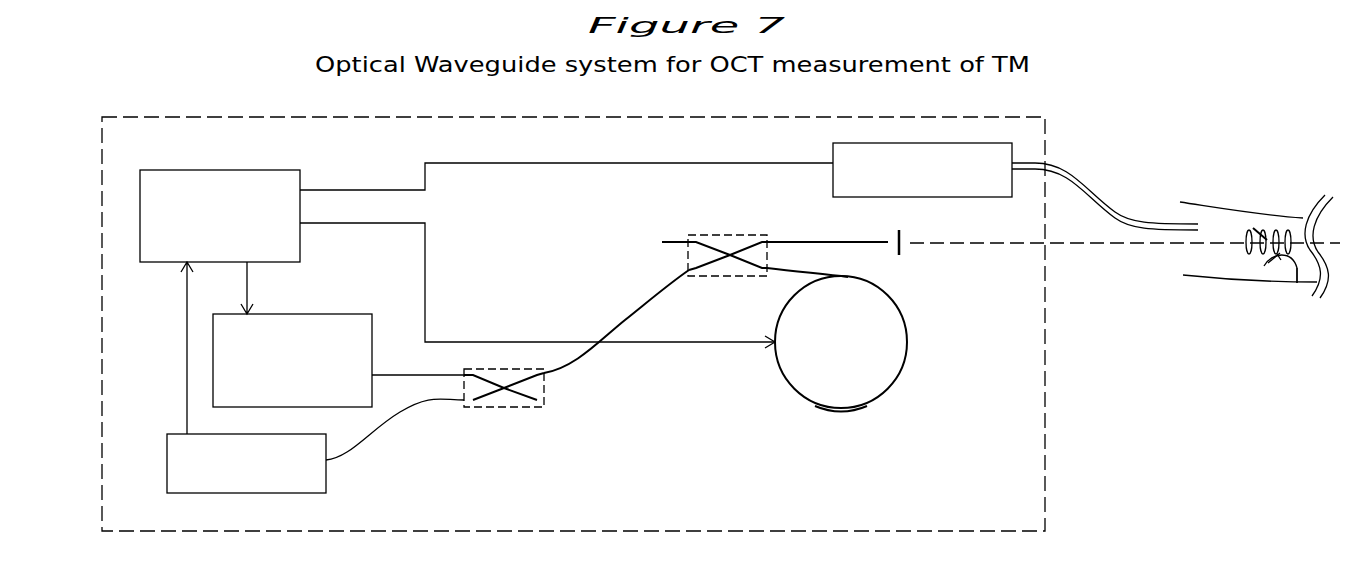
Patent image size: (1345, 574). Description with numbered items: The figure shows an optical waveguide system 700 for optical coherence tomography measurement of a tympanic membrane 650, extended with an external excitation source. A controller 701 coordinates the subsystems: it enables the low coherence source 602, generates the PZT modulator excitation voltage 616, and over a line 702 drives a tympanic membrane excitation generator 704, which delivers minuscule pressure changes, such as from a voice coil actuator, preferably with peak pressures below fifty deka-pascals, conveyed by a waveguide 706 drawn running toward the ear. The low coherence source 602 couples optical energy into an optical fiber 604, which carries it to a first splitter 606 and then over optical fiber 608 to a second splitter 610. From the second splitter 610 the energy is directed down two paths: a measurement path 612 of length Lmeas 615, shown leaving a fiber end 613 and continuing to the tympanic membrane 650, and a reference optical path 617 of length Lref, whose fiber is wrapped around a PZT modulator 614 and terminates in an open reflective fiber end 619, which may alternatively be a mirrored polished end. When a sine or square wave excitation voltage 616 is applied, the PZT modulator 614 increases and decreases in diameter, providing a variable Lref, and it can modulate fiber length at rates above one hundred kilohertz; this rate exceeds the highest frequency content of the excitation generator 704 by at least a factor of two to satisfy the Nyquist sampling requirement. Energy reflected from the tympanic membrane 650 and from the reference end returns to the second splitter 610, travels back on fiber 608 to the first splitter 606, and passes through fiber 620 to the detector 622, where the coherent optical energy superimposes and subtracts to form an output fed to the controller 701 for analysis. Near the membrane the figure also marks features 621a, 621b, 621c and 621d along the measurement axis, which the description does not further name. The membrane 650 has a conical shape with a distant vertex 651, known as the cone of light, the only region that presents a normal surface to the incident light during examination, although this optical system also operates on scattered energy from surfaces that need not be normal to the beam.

The optical waveguide OCT system 700 is at (235, 105).
The controller 701 is at (220, 201).
The control line to TM excitation generator 702 is at (566, 178).
The tympanic membrane excitation generator 704 is at (922, 158).
The acoustic waveguide 706 is at (1200, 224).
The low coherence source 602 is at (292, 334).
The optical fiber 604 is at (418, 363).
The first splitter 606 is at (519, 419).
The optical fiber 608 is at (616, 321).
The second splitter 610 is at (729, 228).
The measurement path 612 is at (827, 227).
The fiber end / probe tip 613 is at (891, 231).
The PZT modulator 614 is at (841, 387).
The Lmeas 615 is at (1125, 242).
The PZT modulator excitation voltage 616 is at (537, 273).
The reference optical path 617 is at (784, 275).
The open reflective fiber end 619 is at (815, 407).
The fiber 620 is at (395, 429).
The detector 622 is at (219, 377).
The tympanic membrane reflection surface a 621a is at (1252, 228).
The tympanic membrane reflection surface b 621b is at (1263, 230).
The tympanic membrane reflection surface c 621c is at (1276, 230).
The tympanic membrane reflection surface d 621d is at (1289, 230).
The tympanic membrane 650 is at (1256, 272).
The distant vertex 651 is at (1297, 283).